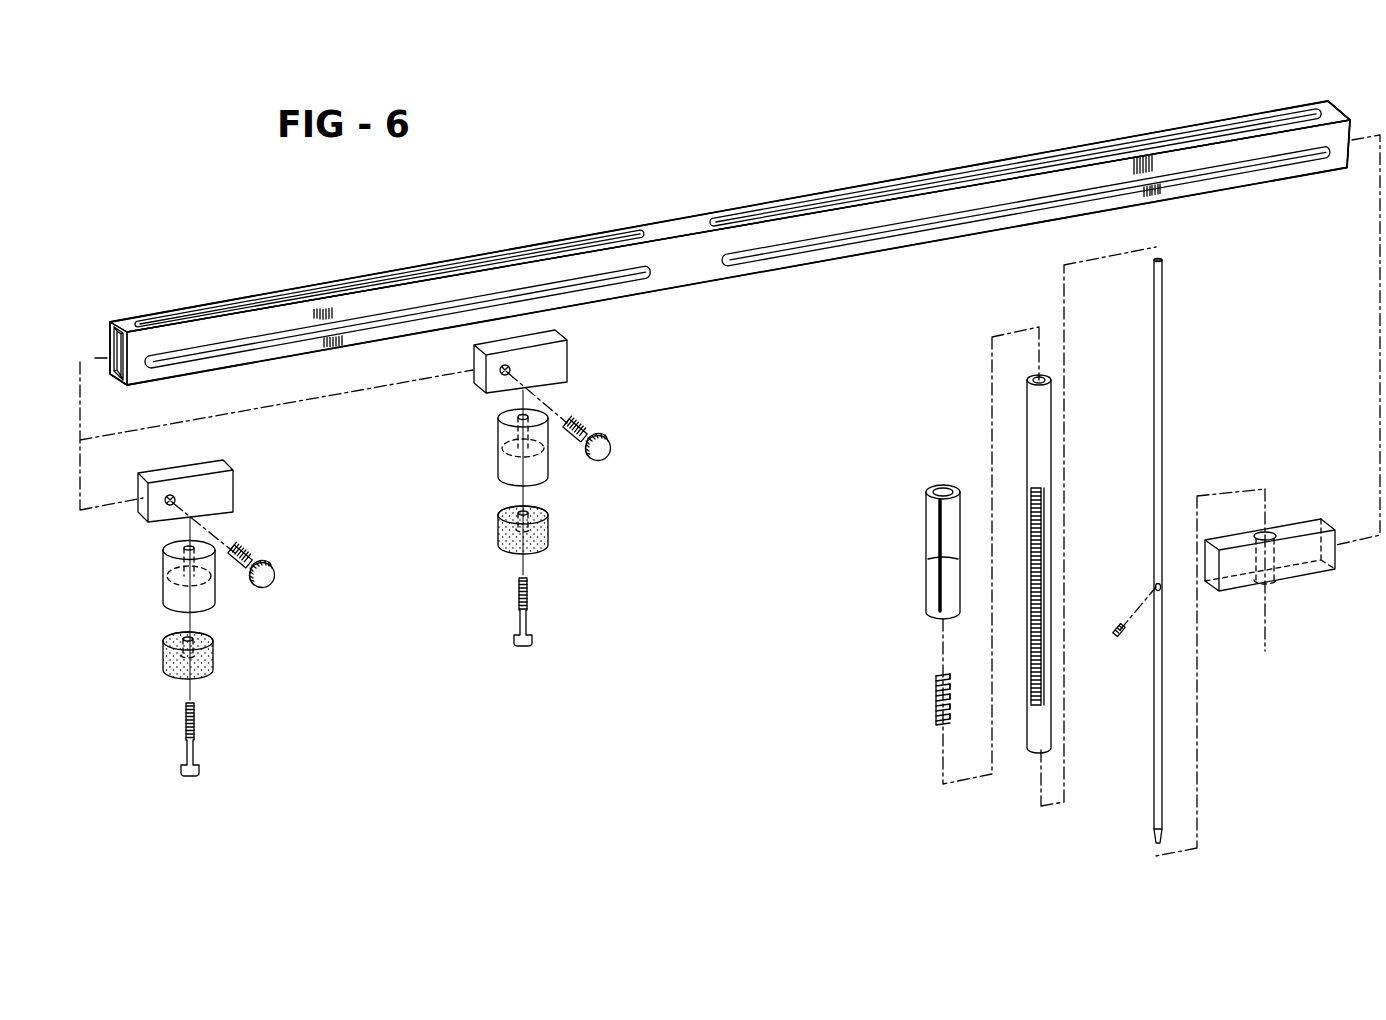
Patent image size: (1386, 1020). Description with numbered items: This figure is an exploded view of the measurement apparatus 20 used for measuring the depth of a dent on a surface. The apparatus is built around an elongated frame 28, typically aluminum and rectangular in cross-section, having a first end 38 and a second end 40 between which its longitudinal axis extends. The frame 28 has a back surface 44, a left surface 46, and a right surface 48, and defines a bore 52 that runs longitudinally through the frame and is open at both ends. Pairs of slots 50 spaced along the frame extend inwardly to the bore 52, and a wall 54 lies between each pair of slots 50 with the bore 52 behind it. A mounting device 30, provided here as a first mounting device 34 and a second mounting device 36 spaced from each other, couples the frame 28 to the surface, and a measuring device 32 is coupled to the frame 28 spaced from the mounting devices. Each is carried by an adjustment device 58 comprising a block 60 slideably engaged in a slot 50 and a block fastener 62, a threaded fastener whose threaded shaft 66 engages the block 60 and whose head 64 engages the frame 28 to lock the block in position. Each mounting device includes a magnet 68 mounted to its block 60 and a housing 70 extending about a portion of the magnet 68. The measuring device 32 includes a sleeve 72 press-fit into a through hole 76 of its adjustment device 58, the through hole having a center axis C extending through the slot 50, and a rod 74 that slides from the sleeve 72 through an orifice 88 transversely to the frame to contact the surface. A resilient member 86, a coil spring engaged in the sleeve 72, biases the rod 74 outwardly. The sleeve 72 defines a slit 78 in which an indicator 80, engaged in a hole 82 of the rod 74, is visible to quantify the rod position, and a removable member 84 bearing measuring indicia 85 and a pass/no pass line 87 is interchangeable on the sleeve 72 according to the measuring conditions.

The measurement apparatus 20 is at (558, 150).
The frame 28 is at (119, 322).
The mounting device 30 is at (160, 618).
The measuring device 32 is at (898, 658).
The first mounting device 34 is at (152, 546).
The second mounting device 36 is at (478, 440).
The first end 38 is at (1347, 113).
The second end 40 is at (110, 335).
The back surface 44 is at (660, 228).
The left surface 46 is at (108, 352).
The right surface 48 is at (683, 272).
The slot 50 is at (290, 333).
The bore 52 is at (110, 365).
The wall 54 is at (694, 253).
The adjustment device 58 is at (762, 480).
The block 60 is at (228, 492).
The block fastener 62 is at (272, 589).
The head 64 is at (266, 574).
The threaded shaft 66 is at (238, 550).
The magnet 68 is at (167, 650).
The housing 70 is at (163, 565).
The sleeve 72 is at (1030, 405).
The rod 74 is at (1163, 350).
The through hole 76 is at (1268, 532).
The slit 78 is at (1032, 692).
The indicator 80 is at (1118, 622).
The hole 82 is at (1156, 587).
The removable member 84 is at (932, 535).
The measuring indicia 85 is at (892, 564).
The resilient member 86 is at (935, 720).
The pass/no pass line 87 is at (926, 572).
The orifice 88 is at (1042, 378).
The center axis C is at (1267, 600).